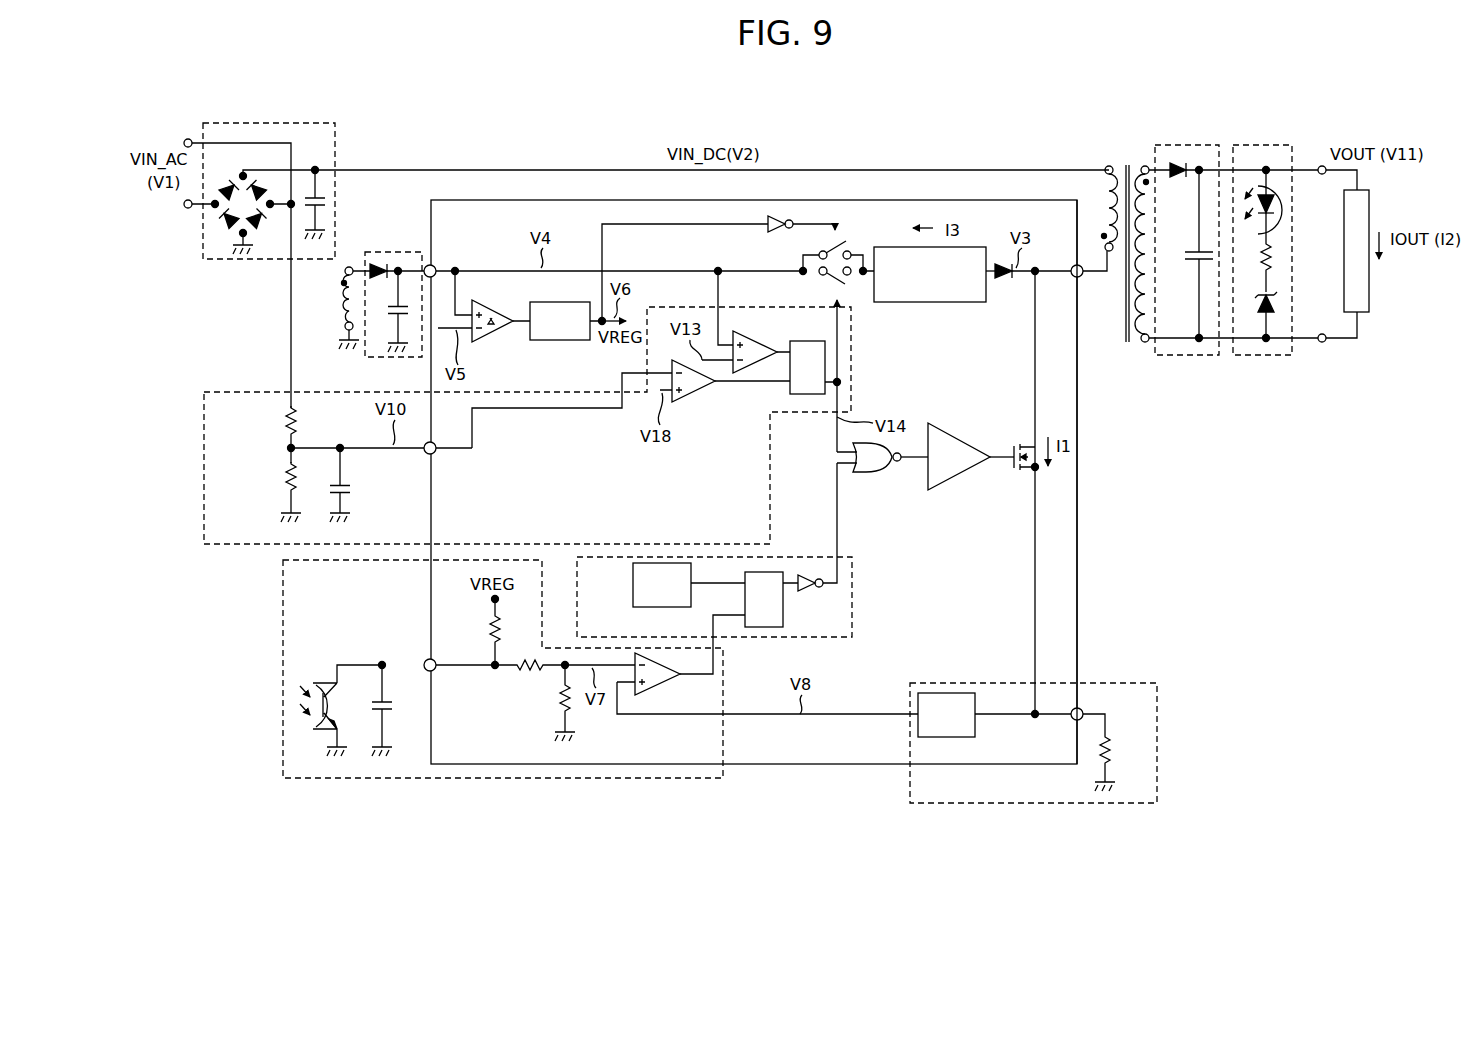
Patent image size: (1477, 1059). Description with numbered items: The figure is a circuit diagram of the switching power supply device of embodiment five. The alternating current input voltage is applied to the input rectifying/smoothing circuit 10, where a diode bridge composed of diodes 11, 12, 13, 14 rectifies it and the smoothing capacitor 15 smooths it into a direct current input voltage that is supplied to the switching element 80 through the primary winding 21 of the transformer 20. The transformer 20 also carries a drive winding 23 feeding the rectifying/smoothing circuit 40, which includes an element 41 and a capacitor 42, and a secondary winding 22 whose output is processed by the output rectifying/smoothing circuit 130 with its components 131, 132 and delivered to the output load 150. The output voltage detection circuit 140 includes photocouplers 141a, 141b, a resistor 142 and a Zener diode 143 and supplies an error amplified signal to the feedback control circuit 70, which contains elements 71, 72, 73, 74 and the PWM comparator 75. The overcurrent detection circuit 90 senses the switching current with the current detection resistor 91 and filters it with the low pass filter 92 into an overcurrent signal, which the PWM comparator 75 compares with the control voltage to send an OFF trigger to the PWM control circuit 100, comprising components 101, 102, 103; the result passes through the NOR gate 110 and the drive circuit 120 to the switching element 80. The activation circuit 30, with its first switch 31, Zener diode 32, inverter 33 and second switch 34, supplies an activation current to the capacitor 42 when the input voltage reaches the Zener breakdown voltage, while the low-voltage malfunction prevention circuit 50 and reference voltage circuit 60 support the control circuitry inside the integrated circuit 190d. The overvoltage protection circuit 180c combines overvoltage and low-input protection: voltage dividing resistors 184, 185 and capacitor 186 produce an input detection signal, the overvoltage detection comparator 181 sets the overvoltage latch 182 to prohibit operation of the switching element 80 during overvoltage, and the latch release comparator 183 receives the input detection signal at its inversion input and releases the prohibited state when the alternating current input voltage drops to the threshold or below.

The input rectifying/smoothing circuit 10 is at (300, 122).
The diode 11 is at (228, 182).
The diode 12 is at (257, 182).
The diode 13 is at (225, 223).
The diode 14 is at (258, 223).
The smoothing capacitor 15 is at (318, 190).
The transformer 20 is at (1126, 165).
The primary winding 21 is at (1106, 168).
The secondary winding 22 is at (1148, 168).
The drive winding 23 is at (349, 268).
The activation circuit 30 is at (946, 302).
The first switch 31 is at (848, 282).
The Zener diode 32 is at (1004, 280).
The inverter 33 is at (768, 228).
The second switch 34 is at (850, 244).
The rectifying/smoothing circuit 40 is at (418, 250).
The diode 41 is at (378, 262).
The capacitor 42 is at (388, 318).
The low-voltage malfunction prevention circuit 50 is at (498, 335).
The reference voltage circuit 60 is at (560, 340).
The feedback control circuit 70 is at (282, 665).
The capacitor 71 is at (394, 708).
The resistor 72 is at (490, 630).
The resistor 73 is at (524, 661).
The resistor 74 is at (547, 712).
The PWM comparator 75 is at (650, 695).
The switching element 80 is at (1017, 445).
The overcurrent detection circuit 90 is at (1157, 740).
The current detection resistor 91 is at (1110, 742).
The low pass filter 92 is at (976, 728).
The PWM control circuit 100 is at (854, 590).
The RS flip-flop 101 is at (785, 620).
The oscillator 102 is at (633, 590).
The inverter 103 is at (818, 578).
The NOR gate 110 is at (870, 475).
The drive circuit 120 is at (972, 472).
The output rectifying/smoothing circuit 130 is at (1189, 355).
The diode 131 is at (1180, 166).
The capacitor 132 is at (1189, 260).
The output voltage detection circuit 140 is at (1253, 355).
The photocoupler 141a is at (1270, 190).
The photocoupler 141b is at (323, 690).
The resistor 142 is at (1272, 261).
The Zener diode 143 is at (1272, 306).
The output load 150 is at (1370, 294).
The overvoltage protection circuit 180c is at (851, 375).
The overvoltage detection comparator 181 is at (756, 350).
The overvoltage latch 182 is at (808, 394).
The latch release comparator 183 is at (694, 399).
The voltage dividing resistor 184 is at (286, 410).
The voltage dividing resistor 185 is at (286, 468).
The capacitor 186 is at (354, 488).
The switching control IC 190d is at (1079, 527).